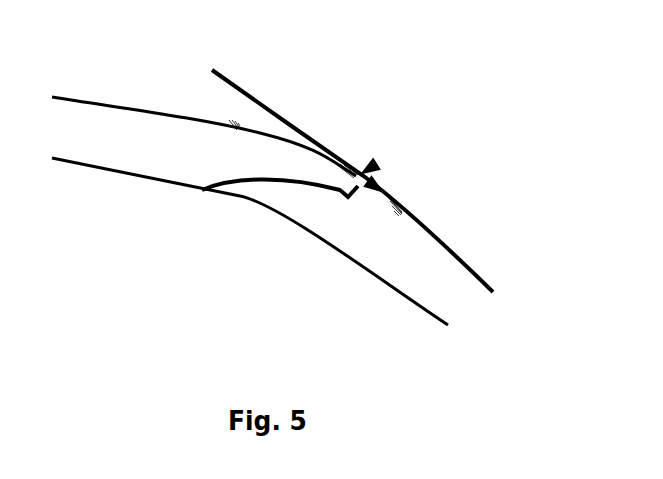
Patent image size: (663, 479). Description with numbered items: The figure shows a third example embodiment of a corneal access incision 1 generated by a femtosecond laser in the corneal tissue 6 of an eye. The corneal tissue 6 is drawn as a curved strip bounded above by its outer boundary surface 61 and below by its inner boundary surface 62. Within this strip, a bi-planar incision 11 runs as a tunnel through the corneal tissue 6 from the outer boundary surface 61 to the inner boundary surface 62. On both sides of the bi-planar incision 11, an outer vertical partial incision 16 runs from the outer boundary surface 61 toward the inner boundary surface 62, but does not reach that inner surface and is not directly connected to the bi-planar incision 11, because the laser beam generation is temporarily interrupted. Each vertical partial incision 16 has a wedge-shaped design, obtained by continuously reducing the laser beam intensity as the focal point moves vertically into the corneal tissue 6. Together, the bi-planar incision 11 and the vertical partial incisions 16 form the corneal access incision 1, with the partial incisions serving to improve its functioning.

The corneal access incision 1 is at (376, 164).
The corneal tissue 6 is at (294, 166).
The bi-planar incision 11 is at (248, 194).
The outer vertical partial incision 16 is at (225, 107).
The outer boundary surface 61 is at (114, 96).
The inner boundary surface 62 is at (121, 184).